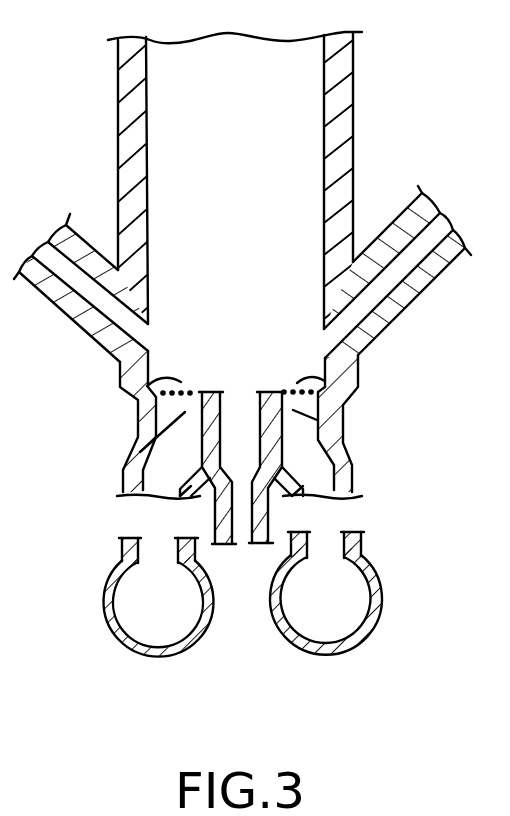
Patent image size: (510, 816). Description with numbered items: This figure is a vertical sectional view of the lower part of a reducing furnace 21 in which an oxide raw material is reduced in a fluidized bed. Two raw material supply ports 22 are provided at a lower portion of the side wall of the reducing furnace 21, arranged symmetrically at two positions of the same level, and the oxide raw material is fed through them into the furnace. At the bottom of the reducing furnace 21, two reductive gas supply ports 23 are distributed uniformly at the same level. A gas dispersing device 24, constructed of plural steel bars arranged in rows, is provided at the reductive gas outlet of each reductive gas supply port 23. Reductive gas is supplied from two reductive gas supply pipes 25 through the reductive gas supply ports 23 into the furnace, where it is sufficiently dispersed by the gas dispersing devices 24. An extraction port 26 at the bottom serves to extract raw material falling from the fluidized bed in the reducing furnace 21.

The reducing furnace 21 is at (343, 97).
The raw material supply ports 22 is at (147, 345).
The reductive gas supply ports 23 is at (137, 438).
The gas dispersing device 24 is at (138, 384).
The reductive gas supply pipes 25 is at (104, 608).
The extraction port 26 is at (240, 533).